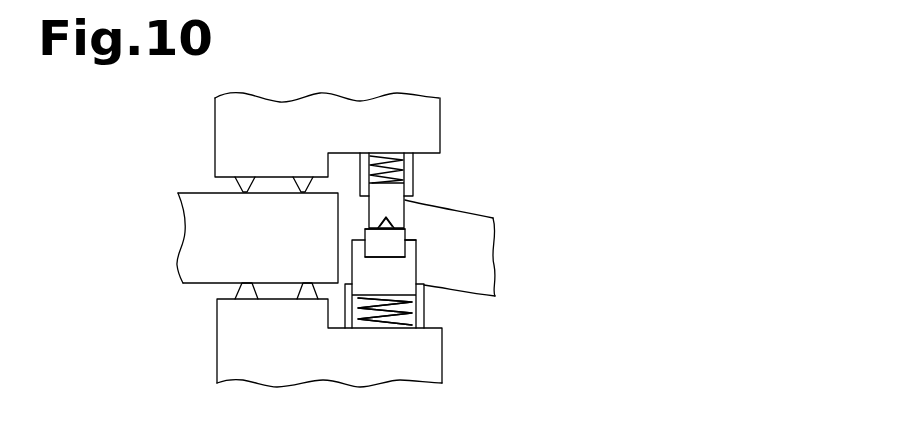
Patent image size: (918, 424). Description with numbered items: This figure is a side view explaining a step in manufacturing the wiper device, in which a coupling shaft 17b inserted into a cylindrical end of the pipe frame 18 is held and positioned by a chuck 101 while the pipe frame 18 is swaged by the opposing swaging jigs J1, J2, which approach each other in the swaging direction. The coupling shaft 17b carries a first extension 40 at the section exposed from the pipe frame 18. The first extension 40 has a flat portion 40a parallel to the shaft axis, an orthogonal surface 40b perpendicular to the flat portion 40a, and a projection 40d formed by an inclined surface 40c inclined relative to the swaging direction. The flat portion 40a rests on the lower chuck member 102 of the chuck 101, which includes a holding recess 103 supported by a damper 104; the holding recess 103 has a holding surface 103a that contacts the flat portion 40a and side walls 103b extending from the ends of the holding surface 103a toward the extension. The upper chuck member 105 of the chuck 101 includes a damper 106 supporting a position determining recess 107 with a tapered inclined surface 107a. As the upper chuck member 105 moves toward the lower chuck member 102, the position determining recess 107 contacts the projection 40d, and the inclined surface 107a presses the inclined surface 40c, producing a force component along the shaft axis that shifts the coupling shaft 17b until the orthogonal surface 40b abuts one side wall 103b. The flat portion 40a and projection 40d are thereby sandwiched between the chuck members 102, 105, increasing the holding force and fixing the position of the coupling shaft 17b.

The upper chuck member 105 is at (441, 115).
The lower chuck member 102 is at (441, 349).
The chuck 101 is at (403, 240).
The pipe frame 18 is at (185, 229).
The swaging jig J1 is at (232, 185).
The swaging jig J2 is at (232, 292).
The damper 106 is at (393, 157).
The position determining recess 107 is at (405, 191).
The inclined surface 107a is at (377, 252).
The first extension 40 is at (365, 246).
The flat portion 40a is at (365, 258).
The orthogonal surface 40b is at (390, 246).
The inclined surface 40c is at (468, 204).
The projection 40d is at (395, 222).
The holding recess 103 is at (411, 284).
The holding surface 103a is at (384, 295).
The side wall 103b is at (418, 244).
The damper 104 is at (382, 328).
The coupling shaft 17b is at (480, 297).